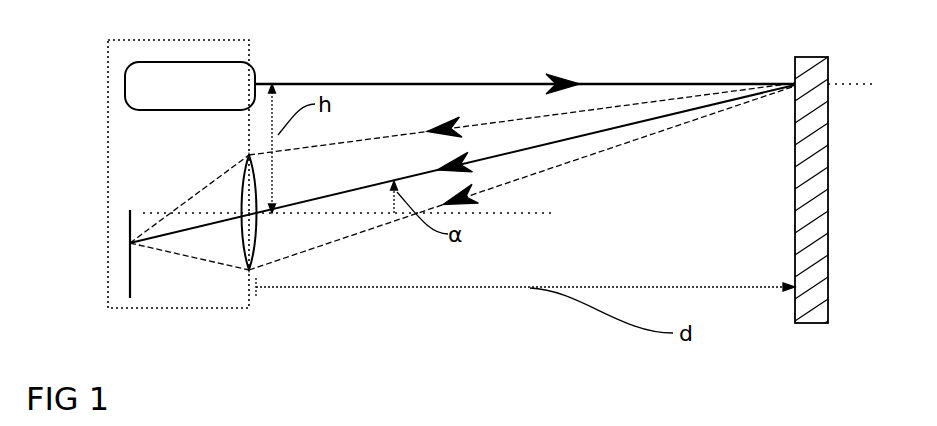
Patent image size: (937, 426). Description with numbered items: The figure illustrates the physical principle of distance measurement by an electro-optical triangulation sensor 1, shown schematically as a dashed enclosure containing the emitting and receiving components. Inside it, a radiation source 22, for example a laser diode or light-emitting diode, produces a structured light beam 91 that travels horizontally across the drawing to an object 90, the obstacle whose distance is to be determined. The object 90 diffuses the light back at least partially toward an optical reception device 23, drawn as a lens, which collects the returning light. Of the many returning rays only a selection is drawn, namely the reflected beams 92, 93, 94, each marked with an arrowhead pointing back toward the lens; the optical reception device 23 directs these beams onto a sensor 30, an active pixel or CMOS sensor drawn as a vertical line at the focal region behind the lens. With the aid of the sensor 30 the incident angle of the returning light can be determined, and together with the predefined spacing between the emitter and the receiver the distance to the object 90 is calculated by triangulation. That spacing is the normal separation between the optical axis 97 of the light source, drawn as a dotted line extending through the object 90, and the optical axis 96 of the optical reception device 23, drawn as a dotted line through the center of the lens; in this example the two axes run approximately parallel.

The distance measuring device 1 is at (108, 172).
The radiation source 22 is at (258, 71).
The optical reception device 23 is at (257, 235).
The sensor 30 is at (132, 272).
The object 90 is at (815, 72).
The light beam 91 is at (450, 83).
The reflected beam 92 is at (355, 142).
The reflected beam 93 is at (345, 190).
The reflected beam 94 is at (362, 233).
The optical axis of the optical reception device 96 is at (535, 212).
The optical axis of the light source 97 is at (843, 85).